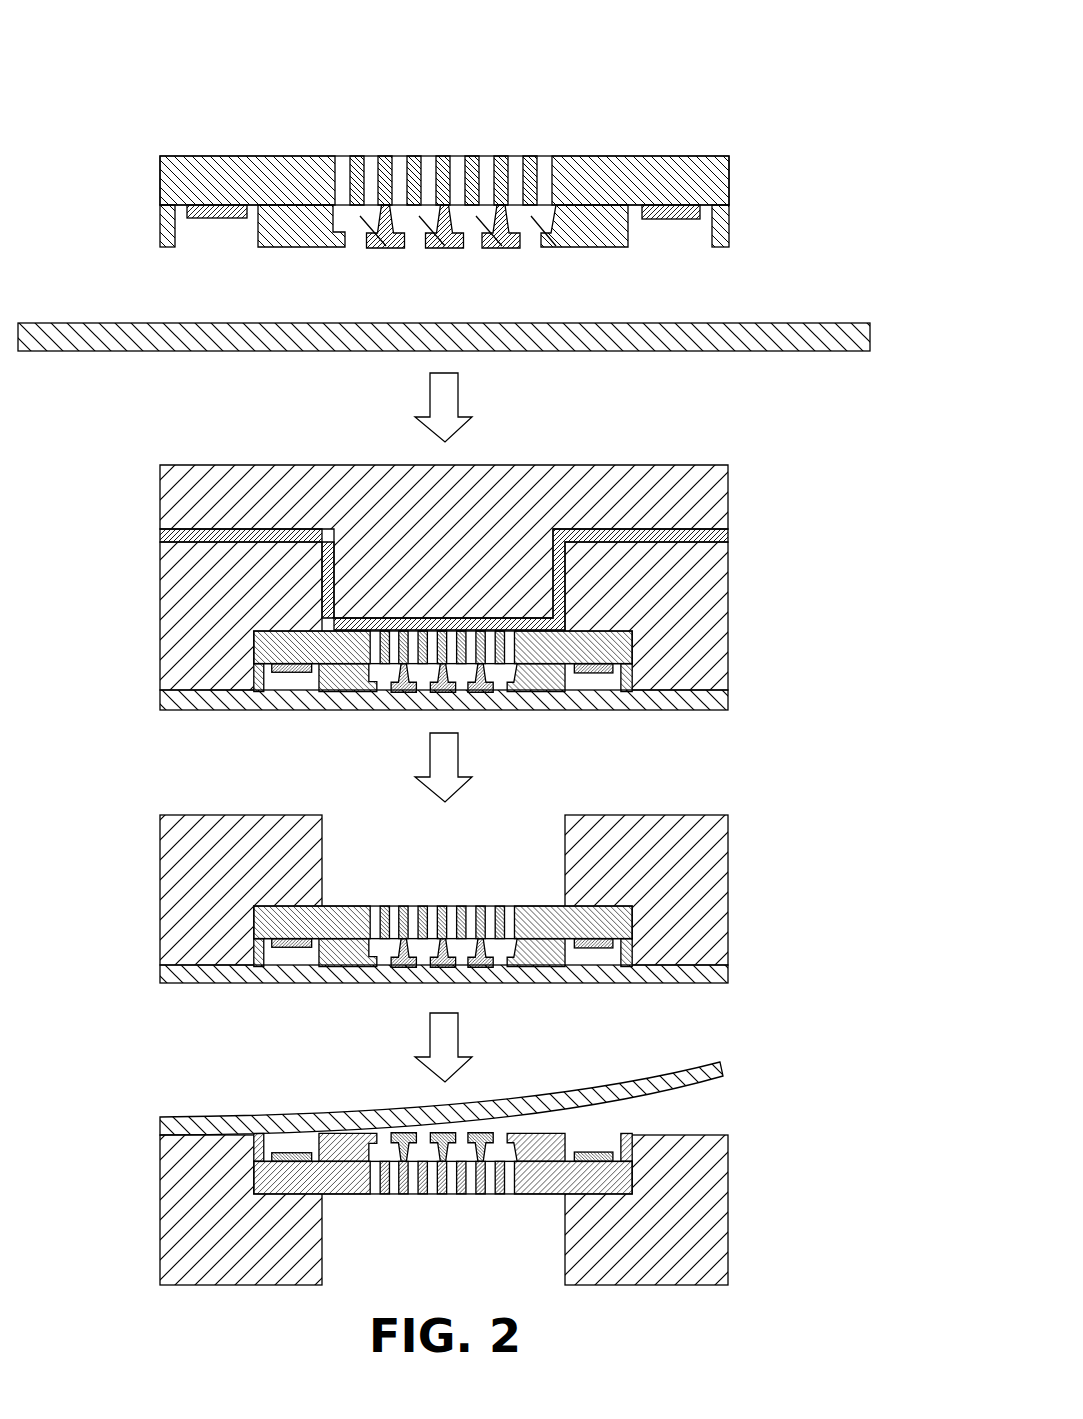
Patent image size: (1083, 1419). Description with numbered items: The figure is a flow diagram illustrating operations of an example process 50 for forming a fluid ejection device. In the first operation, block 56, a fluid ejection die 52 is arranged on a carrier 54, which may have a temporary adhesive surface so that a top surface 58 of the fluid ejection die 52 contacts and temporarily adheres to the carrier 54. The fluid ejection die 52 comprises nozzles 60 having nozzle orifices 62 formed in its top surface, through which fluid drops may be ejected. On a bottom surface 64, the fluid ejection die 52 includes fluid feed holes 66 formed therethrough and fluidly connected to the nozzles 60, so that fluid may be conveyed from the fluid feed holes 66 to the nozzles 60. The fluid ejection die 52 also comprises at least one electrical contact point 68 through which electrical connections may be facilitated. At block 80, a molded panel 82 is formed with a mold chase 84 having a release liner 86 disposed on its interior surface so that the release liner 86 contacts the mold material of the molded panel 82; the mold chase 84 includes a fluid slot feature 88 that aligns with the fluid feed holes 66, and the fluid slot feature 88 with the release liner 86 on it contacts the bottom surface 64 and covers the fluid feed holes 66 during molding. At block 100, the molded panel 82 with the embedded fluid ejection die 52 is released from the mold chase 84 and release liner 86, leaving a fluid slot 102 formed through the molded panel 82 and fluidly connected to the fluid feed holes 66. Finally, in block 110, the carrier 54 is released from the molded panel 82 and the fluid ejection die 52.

The example process 50 is at (750, 68).
The fluid ejection die 52 is at (740, 178).
The carrier 54 is at (872, 337).
The block 56 is at (148, 138).
The top surface 58 is at (160, 232).
The nozzles 60 is at (380, 242).
The nozzle orifices 62 is at (358, 250).
The bottom surface 64 is at (158, 176).
The fluid feed holes 66 is at (385, 154).
The electrical contact point 68 is at (213, 220).
The block 80 is at (146, 456).
The molded panel 82 is at (444, 913).
The mold chase 84 is at (730, 497).
The release liner 86 is at (158, 532).
The fluid slot feature 88 is at (443, 574).
The block 100 is at (146, 803).
The fluid slot 102 is at (443, 1050).
The block 110 is at (150, 1112).